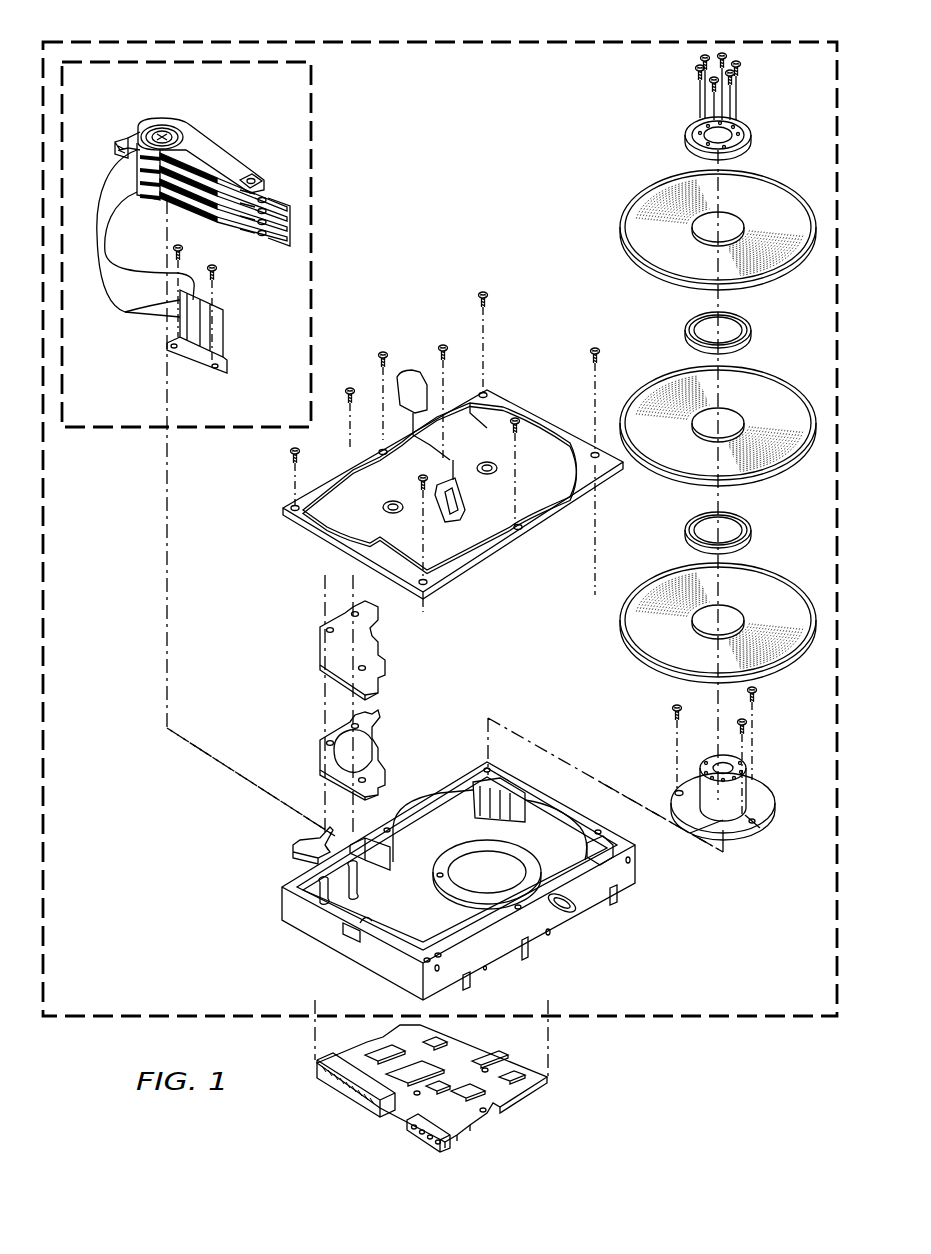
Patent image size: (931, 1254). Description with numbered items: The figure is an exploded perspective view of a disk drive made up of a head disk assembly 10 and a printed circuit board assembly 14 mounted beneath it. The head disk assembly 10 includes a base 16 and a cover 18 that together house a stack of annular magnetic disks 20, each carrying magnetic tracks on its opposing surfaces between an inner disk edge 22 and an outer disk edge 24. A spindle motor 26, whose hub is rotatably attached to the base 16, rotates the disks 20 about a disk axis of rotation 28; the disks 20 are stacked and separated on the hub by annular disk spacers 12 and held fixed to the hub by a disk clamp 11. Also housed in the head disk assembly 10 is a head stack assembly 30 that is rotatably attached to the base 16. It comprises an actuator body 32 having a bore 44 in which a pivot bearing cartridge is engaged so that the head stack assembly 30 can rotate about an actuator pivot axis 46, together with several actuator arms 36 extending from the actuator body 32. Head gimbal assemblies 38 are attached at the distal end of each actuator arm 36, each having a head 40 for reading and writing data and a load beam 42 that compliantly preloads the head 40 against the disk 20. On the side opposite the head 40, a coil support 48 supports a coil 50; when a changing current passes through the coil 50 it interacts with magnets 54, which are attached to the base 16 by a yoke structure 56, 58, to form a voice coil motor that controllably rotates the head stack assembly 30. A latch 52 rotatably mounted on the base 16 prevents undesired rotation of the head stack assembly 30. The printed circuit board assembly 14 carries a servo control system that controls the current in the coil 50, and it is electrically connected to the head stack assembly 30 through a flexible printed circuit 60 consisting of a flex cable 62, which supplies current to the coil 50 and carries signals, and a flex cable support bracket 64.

The head disk assembly 10 is at (640, 1025).
The disk clamp 11 is at (742, 122).
The annular disk spacer 12 is at (686, 338).
The printed circuit board assembly 14 is at (522, 1100).
The base 16 is at (580, 918).
The cover 18 is at (488, 393).
The annular magnetic disk 20 is at (770, 172).
The inner disk edge 22 is at (745, 217).
The outer disk edge 24 is at (668, 280).
The spindle motor 26 is at (762, 822).
The disk axis of rotation 28 is at (715, 853).
The head stack assembly 30 is at (130, 441).
The actuator body 32 is at (158, 126).
The actuator arm 36 is at (203, 152).
The head gimbal assembly 38 is at (250, 186).
The head 40 is at (262, 245).
The load beam 42 is at (276, 203).
The bore 44 is at (170, 133).
The actuator pivot axis 46 is at (258, 778).
The coil support 48 is at (116, 145).
The coil 50 is at (135, 128).
The latch 52 is at (292, 850).
The magnet 54 is at (327, 758).
The yoke structure 56 is at (325, 649).
The yoke structure 58 is at (372, 770).
The flexible printed circuit 60 is at (106, 207).
The flex cable 62 is at (130, 307).
The flex cable support bracket 64 is at (228, 343).